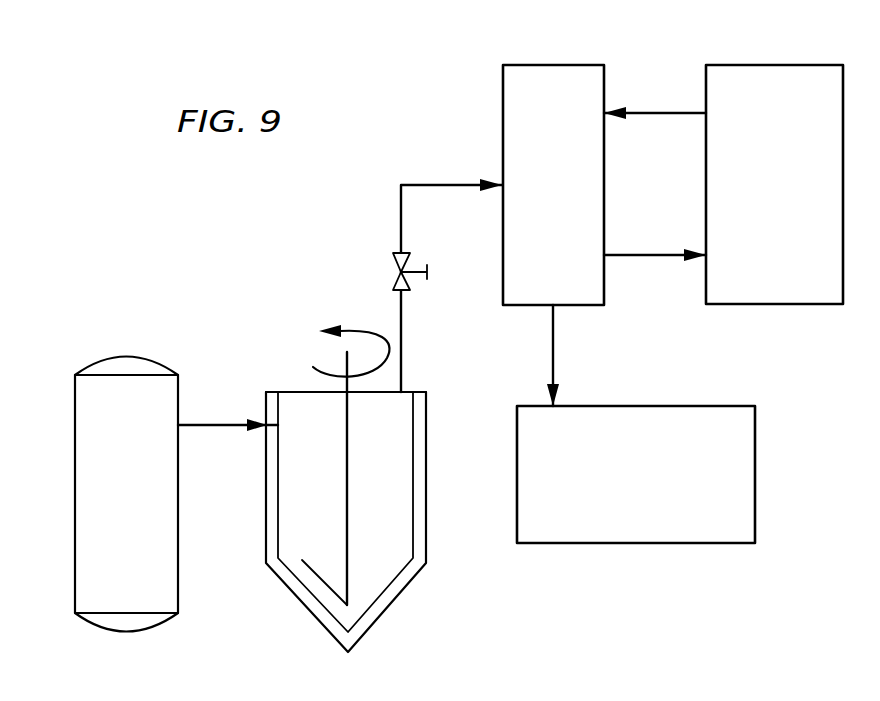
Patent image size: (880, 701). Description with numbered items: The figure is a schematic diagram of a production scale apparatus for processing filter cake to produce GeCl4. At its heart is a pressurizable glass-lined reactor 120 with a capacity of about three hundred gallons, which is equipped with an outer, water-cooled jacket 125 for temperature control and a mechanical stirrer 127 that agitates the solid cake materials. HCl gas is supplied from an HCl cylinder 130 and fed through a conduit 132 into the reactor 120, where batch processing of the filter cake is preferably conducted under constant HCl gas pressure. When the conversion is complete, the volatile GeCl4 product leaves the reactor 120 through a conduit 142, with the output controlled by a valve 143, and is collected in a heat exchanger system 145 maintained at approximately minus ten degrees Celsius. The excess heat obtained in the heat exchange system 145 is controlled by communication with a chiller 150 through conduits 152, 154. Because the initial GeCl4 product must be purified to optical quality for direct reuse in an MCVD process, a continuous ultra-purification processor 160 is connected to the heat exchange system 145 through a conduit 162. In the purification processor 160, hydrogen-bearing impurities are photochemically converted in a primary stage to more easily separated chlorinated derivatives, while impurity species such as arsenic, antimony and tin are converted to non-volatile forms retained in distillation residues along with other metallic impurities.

The reactor 120 is at (290, 497).
The outer water-cooled jacket 125 is at (422, 423).
The mechanical stirrer 127 is at (390, 563).
The HCl cylinder 130 is at (73, 427).
The conduit 132 is at (214, 422).
The conduit 142 is at (434, 183).
The valve 143 is at (395, 280).
The heat exchanger system 145 is at (544, 63).
The chiller 150 is at (766, 63).
The conduit 152 is at (647, 253).
The conduit 154 is at (650, 110).
The purification processor 160 is at (650, 403).
The conduit 162 is at (557, 362).